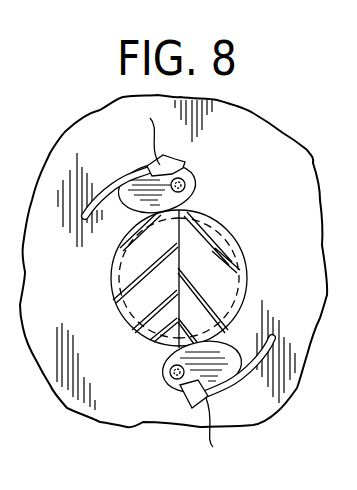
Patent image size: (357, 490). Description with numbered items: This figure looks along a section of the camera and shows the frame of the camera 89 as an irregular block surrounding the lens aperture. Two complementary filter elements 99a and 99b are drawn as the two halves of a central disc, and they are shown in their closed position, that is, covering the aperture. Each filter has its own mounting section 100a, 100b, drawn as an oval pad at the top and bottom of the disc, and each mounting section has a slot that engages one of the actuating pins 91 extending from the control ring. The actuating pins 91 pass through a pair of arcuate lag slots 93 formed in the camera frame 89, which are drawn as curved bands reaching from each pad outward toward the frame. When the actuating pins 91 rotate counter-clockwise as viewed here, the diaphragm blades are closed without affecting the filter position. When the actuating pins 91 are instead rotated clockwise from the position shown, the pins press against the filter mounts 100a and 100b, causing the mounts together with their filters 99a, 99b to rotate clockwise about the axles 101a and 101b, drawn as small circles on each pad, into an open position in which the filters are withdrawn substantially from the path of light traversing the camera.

The camera frame 89 is at (268, 137).
The actuating pins 91 is at (186, 287).
The arcuate lag slots 93 is at (106, 180).
The complementary filter element 99a is at (128, 293).
The complementary filter element 99b is at (215, 258).
The mounting section 100a is at (193, 197).
The mounting section 100b is at (167, 360).
The axle 101a is at (186, 185).
The axle 101b is at (170, 374).